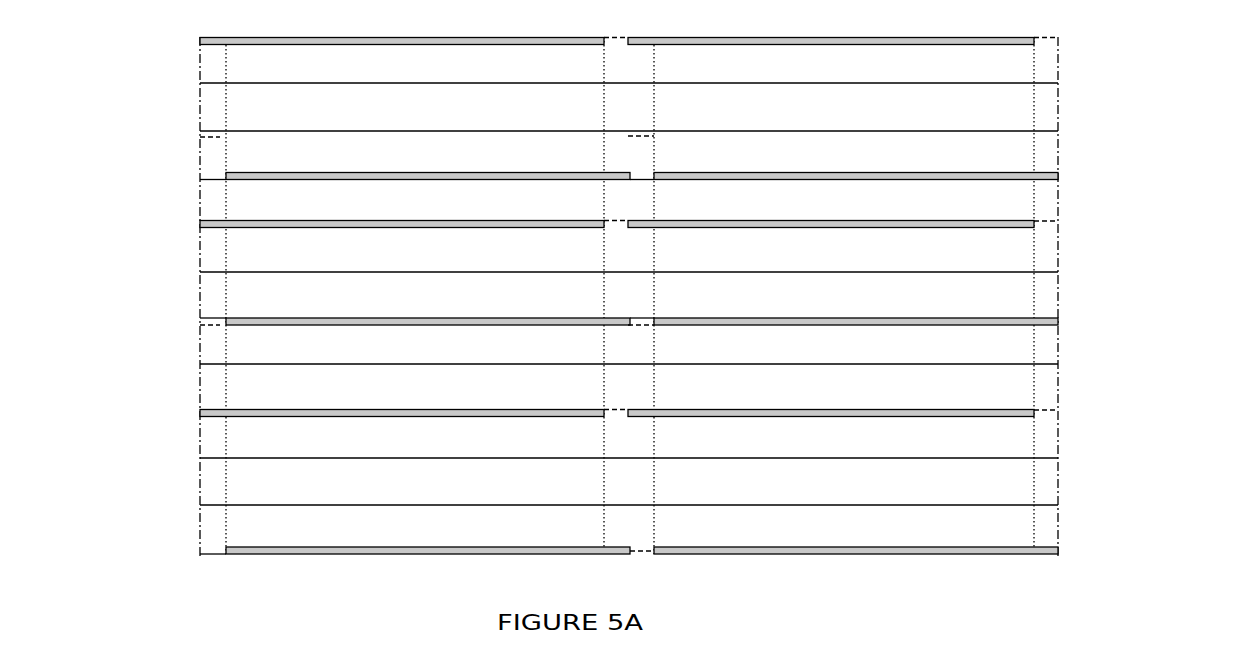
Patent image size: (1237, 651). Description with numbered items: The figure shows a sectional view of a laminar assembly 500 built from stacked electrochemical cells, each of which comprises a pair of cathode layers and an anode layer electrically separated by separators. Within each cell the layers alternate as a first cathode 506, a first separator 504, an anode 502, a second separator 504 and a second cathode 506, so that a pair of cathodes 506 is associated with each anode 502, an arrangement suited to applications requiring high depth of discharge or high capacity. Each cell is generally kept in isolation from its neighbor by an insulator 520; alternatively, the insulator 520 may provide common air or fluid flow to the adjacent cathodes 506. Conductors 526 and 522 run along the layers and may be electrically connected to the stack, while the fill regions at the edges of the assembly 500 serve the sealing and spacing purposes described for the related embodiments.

The laminar assembly 500 is at (100, 107).
The anode 502 is at (457, 163).
The separator 504 is at (470, 116).
The cathode 506 is at (463, 73).
The insulator 520 is at (465, 300).
The conductor 522 is at (1058, 175).
The conductor 526 is at (200, 40).